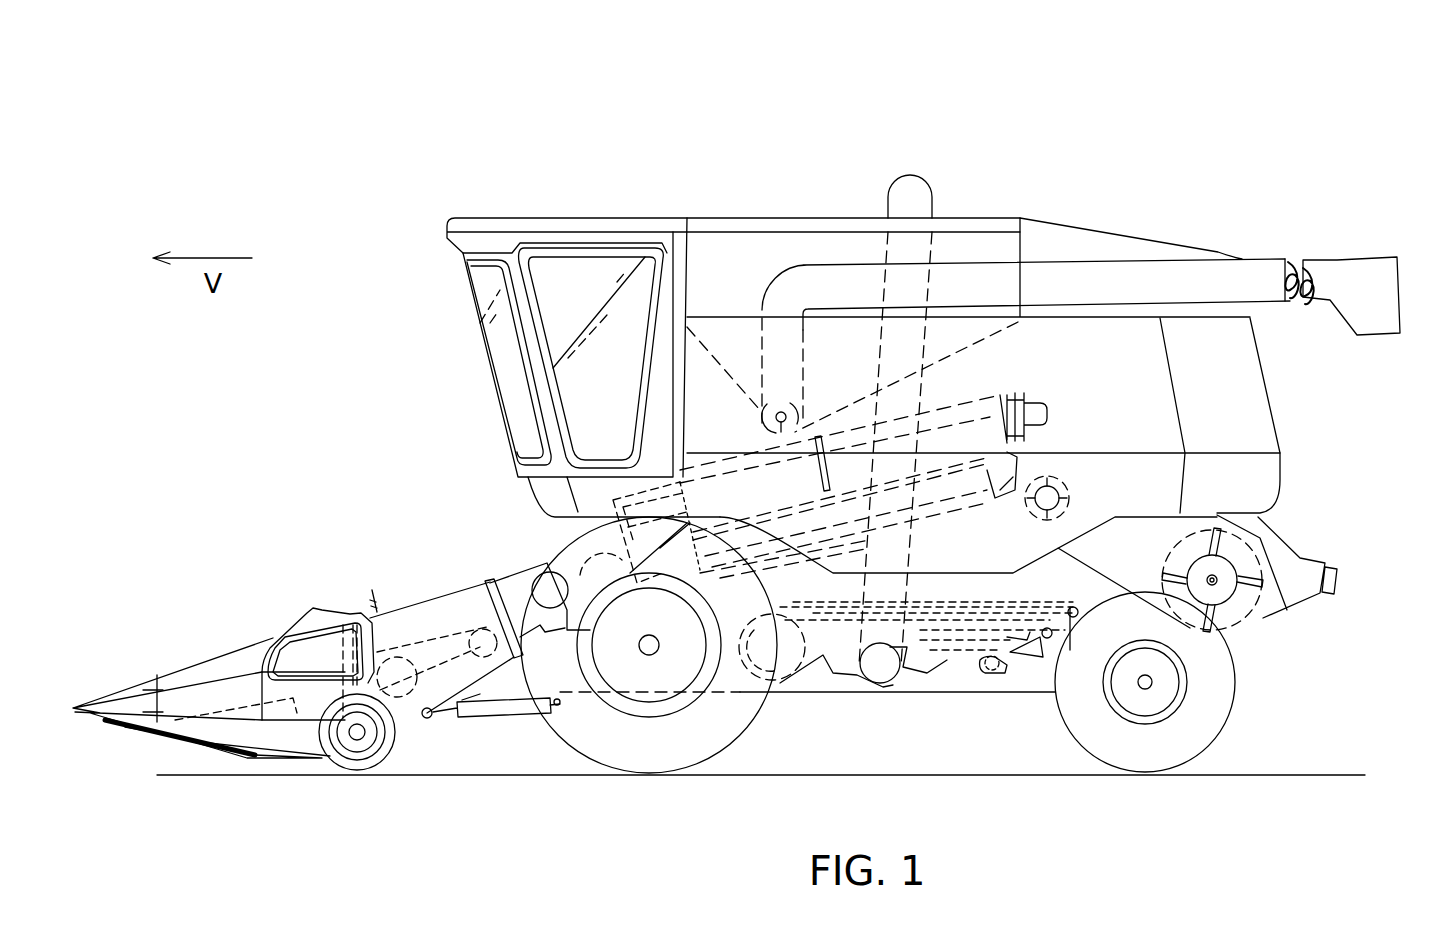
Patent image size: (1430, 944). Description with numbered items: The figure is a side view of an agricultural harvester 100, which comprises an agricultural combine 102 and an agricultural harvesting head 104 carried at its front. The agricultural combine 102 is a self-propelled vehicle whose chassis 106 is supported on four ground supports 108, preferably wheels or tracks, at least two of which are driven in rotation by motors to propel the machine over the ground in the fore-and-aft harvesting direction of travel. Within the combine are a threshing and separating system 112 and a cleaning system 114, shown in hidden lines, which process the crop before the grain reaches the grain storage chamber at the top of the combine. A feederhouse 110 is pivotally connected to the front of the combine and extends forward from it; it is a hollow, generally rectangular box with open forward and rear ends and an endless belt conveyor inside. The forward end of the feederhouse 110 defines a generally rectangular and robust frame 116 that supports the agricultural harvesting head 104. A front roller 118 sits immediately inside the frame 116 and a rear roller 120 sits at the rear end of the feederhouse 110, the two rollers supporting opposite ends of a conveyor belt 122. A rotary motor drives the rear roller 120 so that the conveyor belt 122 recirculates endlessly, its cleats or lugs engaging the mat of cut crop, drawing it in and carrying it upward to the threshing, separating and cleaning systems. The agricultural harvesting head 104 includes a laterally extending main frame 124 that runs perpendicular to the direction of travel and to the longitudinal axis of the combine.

The agricultural harvester 100 is at (437, 77).
The agricultural combine 102 is at (762, 217).
The agricultural harvesting head 104 is at (210, 652).
The chassis 106 is at (972, 695).
The ground supports 108 is at (724, 752).
The feederhouse 110 is at (458, 595).
The threshing and separating system 112 is at (968, 395).
The cleaning system 114 is at (968, 592).
The frame 116 is at (380, 650).
The front roller 118 is at (415, 728).
The rear roller 120 is at (500, 718).
The conveyor belt 122 is at (470, 705).
The main frame 124 is at (334, 583).